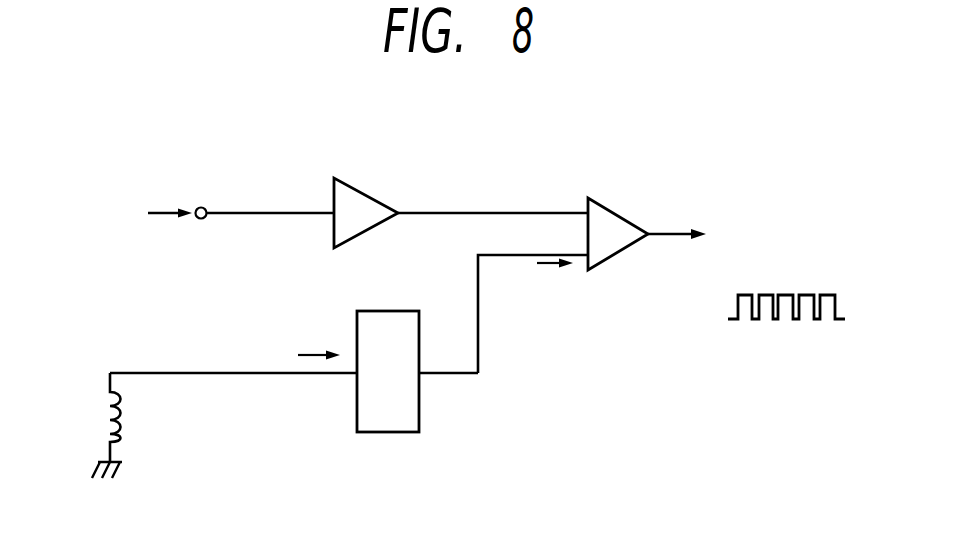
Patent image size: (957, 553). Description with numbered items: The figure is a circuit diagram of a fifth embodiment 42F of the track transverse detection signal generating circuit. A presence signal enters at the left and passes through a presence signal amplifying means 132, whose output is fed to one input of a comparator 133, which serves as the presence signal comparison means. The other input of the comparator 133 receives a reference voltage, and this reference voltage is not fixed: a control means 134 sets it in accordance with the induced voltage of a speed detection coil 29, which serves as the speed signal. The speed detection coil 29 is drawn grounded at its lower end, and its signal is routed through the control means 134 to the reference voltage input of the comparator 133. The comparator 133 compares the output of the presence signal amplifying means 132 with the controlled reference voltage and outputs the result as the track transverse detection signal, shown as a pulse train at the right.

The fifth embodiment 42F is at (679, 152).
The presence signal amplifying means 132 is at (362, 190).
The comparator 133 is at (618, 213).
The control means 134 is at (413, 433).
The speed detection coil 29 is at (105, 418).